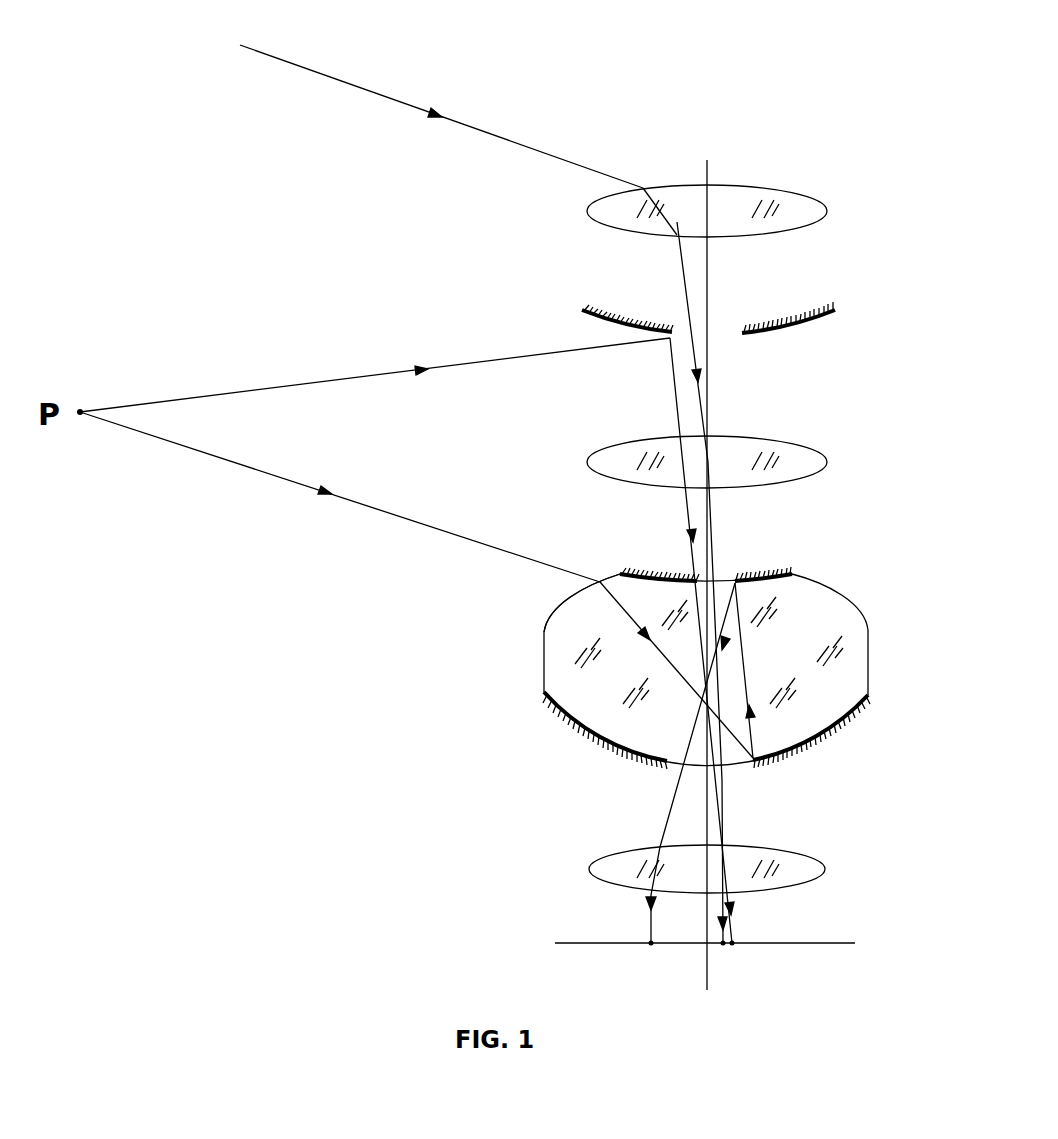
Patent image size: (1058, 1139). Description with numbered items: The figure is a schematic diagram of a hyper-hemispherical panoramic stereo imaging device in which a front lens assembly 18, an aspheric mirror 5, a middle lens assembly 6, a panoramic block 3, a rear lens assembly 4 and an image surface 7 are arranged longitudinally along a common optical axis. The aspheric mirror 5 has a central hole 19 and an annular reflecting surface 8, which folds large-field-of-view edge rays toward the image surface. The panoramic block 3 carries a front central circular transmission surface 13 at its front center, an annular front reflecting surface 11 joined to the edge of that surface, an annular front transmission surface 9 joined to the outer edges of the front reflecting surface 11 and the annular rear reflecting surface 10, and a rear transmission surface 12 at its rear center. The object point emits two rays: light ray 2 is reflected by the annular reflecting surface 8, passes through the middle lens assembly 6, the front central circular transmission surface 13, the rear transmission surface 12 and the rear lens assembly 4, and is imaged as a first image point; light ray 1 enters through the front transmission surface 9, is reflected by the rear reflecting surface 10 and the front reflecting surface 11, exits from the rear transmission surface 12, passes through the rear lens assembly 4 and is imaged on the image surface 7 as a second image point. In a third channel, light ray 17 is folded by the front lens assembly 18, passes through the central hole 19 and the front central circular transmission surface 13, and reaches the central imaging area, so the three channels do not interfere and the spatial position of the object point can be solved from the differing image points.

The light ray 1 is at (417, 679).
The light ray 2 is at (407, 642).
The panoramic block 3 is at (709, 678).
The rear lens assembly 4 is at (732, 869).
The aspheric mirror 5 is at (726, 347).
The middle lens assembly 6 is at (731, 462).
The image surface 7 is at (727, 955).
The annular reflecting surface 8 is at (807, 325).
The front transmission surface 9 is at (553, 617).
The rear reflecting surface 10 is at (748, 763).
The front reflecting surface 11 is at (763, 574).
The rear transmission surface 12 is at (675, 766).
The front central circular transmission surface 13 is at (700, 573).
The light ray 17 is at (441, 116).
The front lens assembly 18 is at (736, 211).
The central hole of aspheric mirror 19 is at (703, 328).